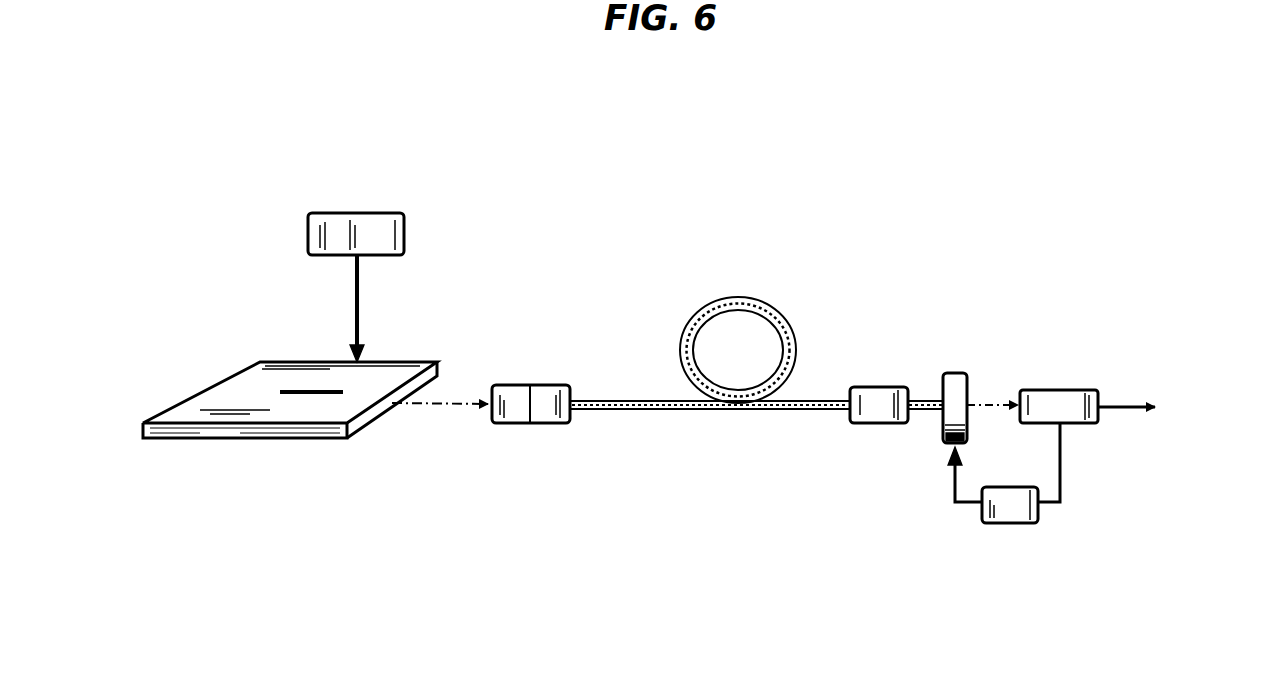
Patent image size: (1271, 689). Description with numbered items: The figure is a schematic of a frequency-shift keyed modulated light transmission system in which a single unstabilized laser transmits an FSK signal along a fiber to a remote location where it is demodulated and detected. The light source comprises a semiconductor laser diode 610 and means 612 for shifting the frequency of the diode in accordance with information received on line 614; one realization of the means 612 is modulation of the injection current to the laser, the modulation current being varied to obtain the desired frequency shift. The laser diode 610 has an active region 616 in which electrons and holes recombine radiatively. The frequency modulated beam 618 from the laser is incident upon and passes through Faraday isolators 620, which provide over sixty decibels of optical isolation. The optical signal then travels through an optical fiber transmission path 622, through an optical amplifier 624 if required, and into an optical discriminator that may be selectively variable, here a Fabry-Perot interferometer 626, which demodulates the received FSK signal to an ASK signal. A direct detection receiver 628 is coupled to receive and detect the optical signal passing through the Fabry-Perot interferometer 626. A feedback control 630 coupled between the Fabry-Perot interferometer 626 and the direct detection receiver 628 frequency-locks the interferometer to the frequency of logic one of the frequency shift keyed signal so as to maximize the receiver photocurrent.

The semiconductor laser diode 610 is at (212, 410).
The means for shifting the frequency 612 is at (404, 232).
The line 614 is at (350, 198).
The active region 616 is at (318, 396).
The frequency modulated beam 618 is at (441, 408).
The Faraday isolator 620 is at (526, 375).
The optical fiber transmission path 622 is at (785, 320).
The optical amplifier 624 is at (855, 445).
The Fabry-Perot interferometer 626 is at (953, 372).
The direct detection receiver 628 is at (1056, 415).
The feedback control 630 is at (1012, 522).